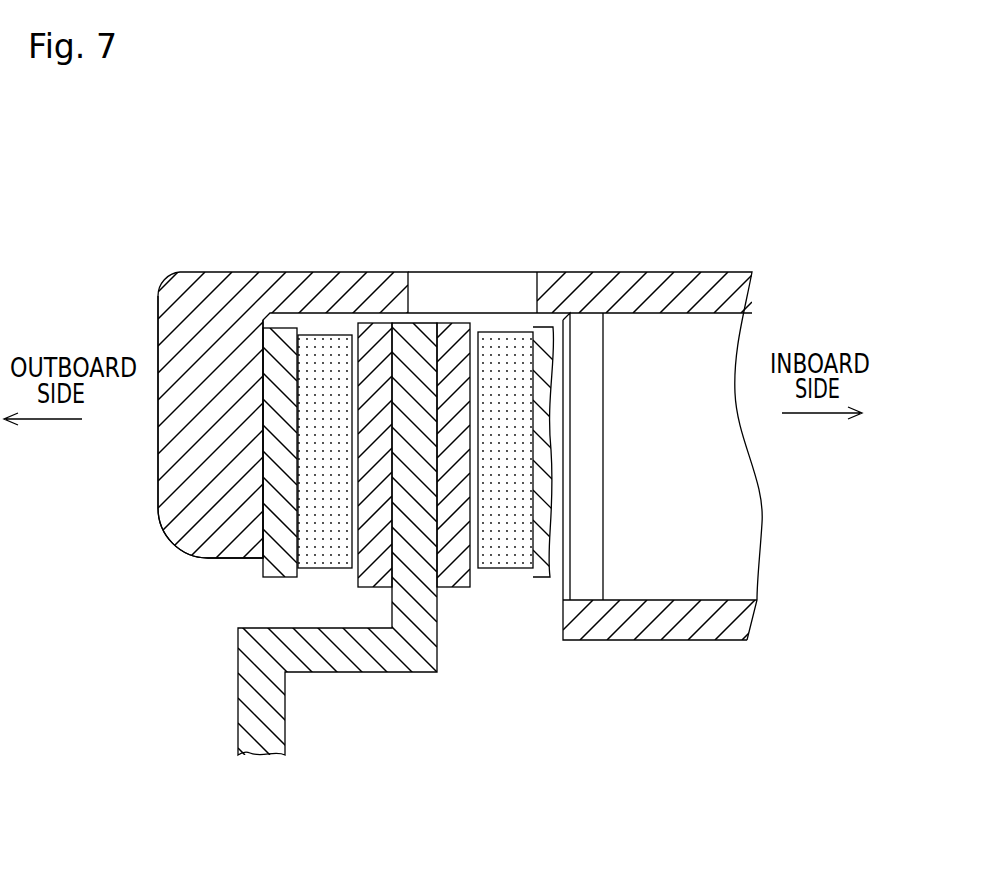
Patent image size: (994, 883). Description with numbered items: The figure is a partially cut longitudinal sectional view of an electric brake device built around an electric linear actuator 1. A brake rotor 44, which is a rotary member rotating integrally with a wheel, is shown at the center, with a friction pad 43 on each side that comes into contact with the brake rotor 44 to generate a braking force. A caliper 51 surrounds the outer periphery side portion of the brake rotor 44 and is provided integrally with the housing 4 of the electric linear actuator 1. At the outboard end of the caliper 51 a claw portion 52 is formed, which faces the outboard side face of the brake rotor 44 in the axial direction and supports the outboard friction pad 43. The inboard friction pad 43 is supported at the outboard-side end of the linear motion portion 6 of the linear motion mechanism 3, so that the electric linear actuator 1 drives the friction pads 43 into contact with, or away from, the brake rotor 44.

The electric linear actuator 1 is at (621, 655).
The linear motion mechanism 3 is at (733, 528).
The housing 4 is at (710, 632).
The linear motion portion 6 is at (692, 473).
The friction pad 43 is at (326, 560).
The brake rotor 44 is at (422, 622).
The caliper 51 is at (313, 266).
The claw portion 52 is at (168, 486).